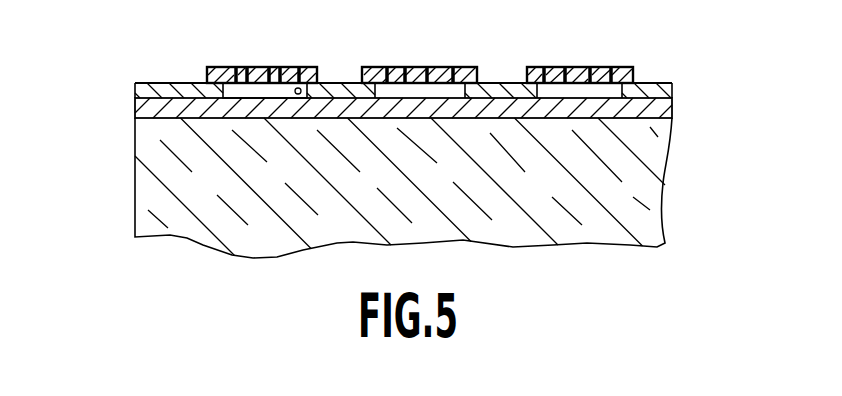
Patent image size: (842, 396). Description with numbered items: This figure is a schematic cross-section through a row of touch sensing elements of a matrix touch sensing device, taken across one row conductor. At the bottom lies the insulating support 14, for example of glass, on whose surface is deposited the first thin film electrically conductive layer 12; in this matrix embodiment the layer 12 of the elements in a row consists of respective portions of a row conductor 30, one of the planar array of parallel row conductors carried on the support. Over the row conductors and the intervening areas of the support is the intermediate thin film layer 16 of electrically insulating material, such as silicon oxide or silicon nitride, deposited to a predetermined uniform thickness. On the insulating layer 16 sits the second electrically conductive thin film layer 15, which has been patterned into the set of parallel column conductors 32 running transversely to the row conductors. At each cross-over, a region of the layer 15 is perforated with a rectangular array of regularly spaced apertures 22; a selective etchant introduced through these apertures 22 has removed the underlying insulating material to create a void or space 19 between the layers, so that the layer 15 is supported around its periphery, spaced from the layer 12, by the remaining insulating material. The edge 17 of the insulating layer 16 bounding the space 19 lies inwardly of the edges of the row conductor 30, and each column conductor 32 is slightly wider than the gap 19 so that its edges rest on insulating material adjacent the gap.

The first thin film electrically conductive layer 12 is at (662, 113).
The insulating support 14 is at (645, 185).
The second electrically conductive thin film layer 15 is at (214, 67).
The intermediate thin film layer of electrically insulating material 16 is at (147, 88).
The edge 17 is at (298, 88).
The space 19 is at (248, 90).
The apertures 22 is at (450, 67).
The row conductors 30 is at (424, 119).
The column conductors 32 is at (396, 50).